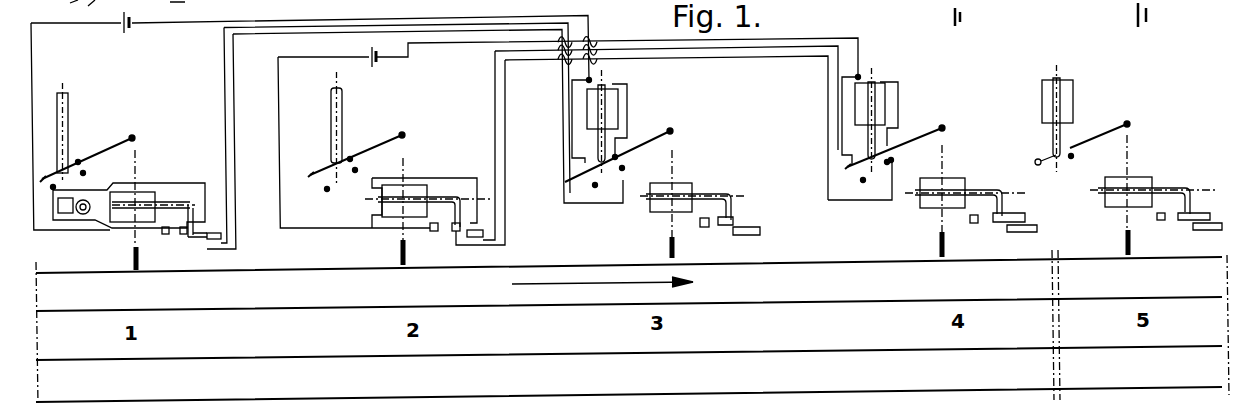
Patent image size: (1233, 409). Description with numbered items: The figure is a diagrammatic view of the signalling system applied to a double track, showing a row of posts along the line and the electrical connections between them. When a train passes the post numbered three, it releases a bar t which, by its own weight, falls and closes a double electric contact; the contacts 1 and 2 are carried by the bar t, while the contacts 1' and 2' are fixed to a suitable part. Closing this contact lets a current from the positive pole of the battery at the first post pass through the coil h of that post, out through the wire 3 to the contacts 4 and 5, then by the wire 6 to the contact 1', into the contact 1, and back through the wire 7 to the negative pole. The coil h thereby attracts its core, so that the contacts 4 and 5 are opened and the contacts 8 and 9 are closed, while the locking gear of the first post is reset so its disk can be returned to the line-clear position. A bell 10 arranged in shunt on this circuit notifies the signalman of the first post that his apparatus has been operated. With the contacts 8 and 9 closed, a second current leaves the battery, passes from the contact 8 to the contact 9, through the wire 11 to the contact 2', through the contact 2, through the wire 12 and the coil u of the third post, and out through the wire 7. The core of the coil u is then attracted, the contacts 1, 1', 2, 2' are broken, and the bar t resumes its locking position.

The contact 1 is at (588, 143).
The contact 1' is at (603, 206).
The contact 2 is at (637, 155).
The contact 2' is at (633, 169).
The wire 3 is at (129, 195).
The contact 4 is at (197, 240).
The contact 5 is at (213, 240).
The wire 6 is at (226, 155).
The wire 7 is at (585, 32).
The contact 8 is at (165, 234).
The contact 9 is at (183, 234).
The bell 10 is at (74, 212).
The wire 11 is at (235, 141).
The wire 12 is at (627, 103).
The coil h is at (129, 215).
The coil u is at (592, 115).
The bar t is at (643, 142).